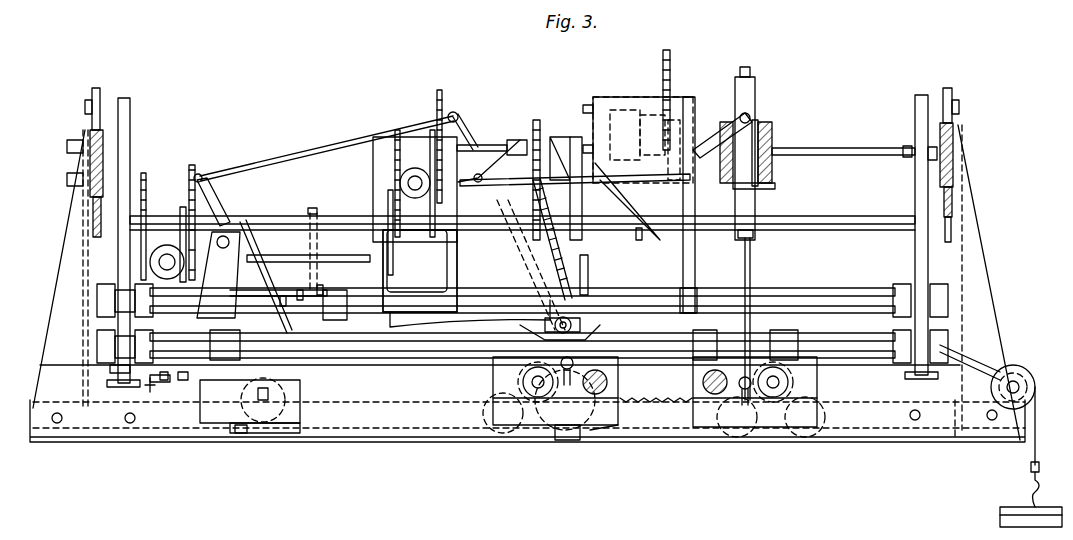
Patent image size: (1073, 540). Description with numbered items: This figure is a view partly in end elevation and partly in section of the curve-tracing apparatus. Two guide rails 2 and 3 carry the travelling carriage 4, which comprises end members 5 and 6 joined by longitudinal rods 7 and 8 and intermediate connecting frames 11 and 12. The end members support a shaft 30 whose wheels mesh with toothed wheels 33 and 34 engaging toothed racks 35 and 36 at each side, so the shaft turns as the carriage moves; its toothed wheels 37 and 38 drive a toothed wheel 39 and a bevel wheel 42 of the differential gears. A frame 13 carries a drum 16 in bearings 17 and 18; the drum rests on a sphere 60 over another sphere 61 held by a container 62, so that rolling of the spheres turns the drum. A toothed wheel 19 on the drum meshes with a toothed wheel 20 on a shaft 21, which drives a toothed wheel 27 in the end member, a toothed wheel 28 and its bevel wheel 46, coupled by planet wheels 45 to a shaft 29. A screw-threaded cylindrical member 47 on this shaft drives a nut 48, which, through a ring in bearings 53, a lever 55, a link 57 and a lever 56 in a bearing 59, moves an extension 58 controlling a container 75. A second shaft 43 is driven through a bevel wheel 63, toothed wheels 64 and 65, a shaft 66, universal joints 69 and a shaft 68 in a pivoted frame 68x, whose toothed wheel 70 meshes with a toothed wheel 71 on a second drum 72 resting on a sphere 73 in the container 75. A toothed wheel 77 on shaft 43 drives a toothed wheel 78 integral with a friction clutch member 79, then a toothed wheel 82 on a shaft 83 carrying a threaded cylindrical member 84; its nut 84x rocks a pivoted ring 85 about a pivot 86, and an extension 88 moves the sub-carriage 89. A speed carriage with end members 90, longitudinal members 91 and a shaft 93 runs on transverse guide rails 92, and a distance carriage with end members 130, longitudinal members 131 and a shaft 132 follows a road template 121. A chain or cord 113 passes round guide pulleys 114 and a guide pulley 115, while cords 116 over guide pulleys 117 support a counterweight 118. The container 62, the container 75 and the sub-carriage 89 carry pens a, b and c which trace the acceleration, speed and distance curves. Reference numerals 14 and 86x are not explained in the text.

The guide rail 2 is at (100, 128).
The guide rail 3 is at (950, 127).
The travelling carriage 4 is at (125, 107).
The end member 5 is at (128, 292).
The end member 6 is at (920, 268).
The longitudinal rod 7 is at (470, 308).
The longitudinal rod 8 is at (915, 466).
The intermediate connecting frame 11 is at (420, 271).
The intermediate connecting frame 12 is at (675, 130).
The frame 13 is at (185, 292).
The bracket 14 is at (150, 385).
The drum 16 is at (300, 295).
The bearing 17 is at (200, 290).
The bearing 18 is at (338, 292).
The toothed wheel 19 is at (320, 290).
The toothed wheel 20 is at (312, 212).
The shaft 21 is at (187, 173).
The toothed wheel 27 is at (140, 173).
The toothed wheel 28 is at (128, 278).
The shaft 29 is at (280, 300).
The shaft 30 is at (243, 220).
The toothed wheel 33 is at (95, 205).
The toothed wheel 34 is at (950, 235).
The toothed rack 35 is at (97, 193).
The toothed rack 36 is at (950, 188).
The toothed wheel 37 is at (198, 180).
The toothed wheel 38 is at (392, 275).
The toothed wheel 39 is at (130, 285).
The bevel wheel 42 is at (395, 130).
The shaft 43 is at (637, 230).
The planet wheel 45 is at (178, 262).
The bevel wheel 46 is at (147, 210).
The cylindrical member 47 is at (133, 285).
The nut 48 is at (260, 213).
The bearing 53 is at (230, 238).
The lever 55 is at (200, 176).
The lever 56 is at (453, 112).
The link 57 is at (298, 153).
The extension 58 is at (553, 330).
The bearing 59 is at (482, 168).
The sphere 60 is at (647, 133).
The sphere 61 is at (248, 430).
The container 62 is at (265, 395).
The bevel wheel 63 is at (433, 142).
The toothed wheel 64 is at (515, 140).
The toothed wheel 65 is at (412, 137).
The shaft 66 is at (438, 90).
The shaft 68 is at (557, 137).
The frame 68x is at (587, 267).
The universal joint 69 is at (467, 140).
The toothed wheel 70 is at (540, 185).
The toothed wheel 71 is at (555, 200).
The second drum 72 is at (510, 265).
The sphere 73 is at (597, 345).
The container 75 is at (600, 417).
The toothed wheel 77 is at (735, 237).
The toothed wheel 78 is at (633, 90).
The friction clutch member 79 is at (660, 73).
The toothed wheel 82 is at (700, 100).
The shaft 83 is at (827, 153).
The cylindrical member 84 is at (772, 150).
The nut 84x is at (732, 122).
The pivoted ring 85 is at (775, 148).
The pivot 86 is at (763, 130).
The pin 86x is at (757, 390).
The extension 88 is at (750, 257).
The sub-carriage 89 is at (780, 340).
The end member 90 is at (500, 380).
The longitudinal connecting member 91 is at (565, 393).
The transverse guide rail 92 is at (505, 383).
The shaft 93 is at (560, 372).
The chain or cord 113 is at (165, 378).
The guide pulley 114 is at (565, 438).
The guide pulley 115 is at (183, 380).
The cord or chain 116 is at (650, 367).
The guide pulley 117 is at (1018, 365).
The counterweight 118 is at (1005, 508).
The road template 121 is at (727, 393).
The end member 130 is at (818, 393).
The longitudinal connecting member 131 is at (775, 385).
The shaft 132 is at (780, 373).
The pen a is at (265, 433).
The pen b is at (540, 407).
The pen c is at (717, 433).